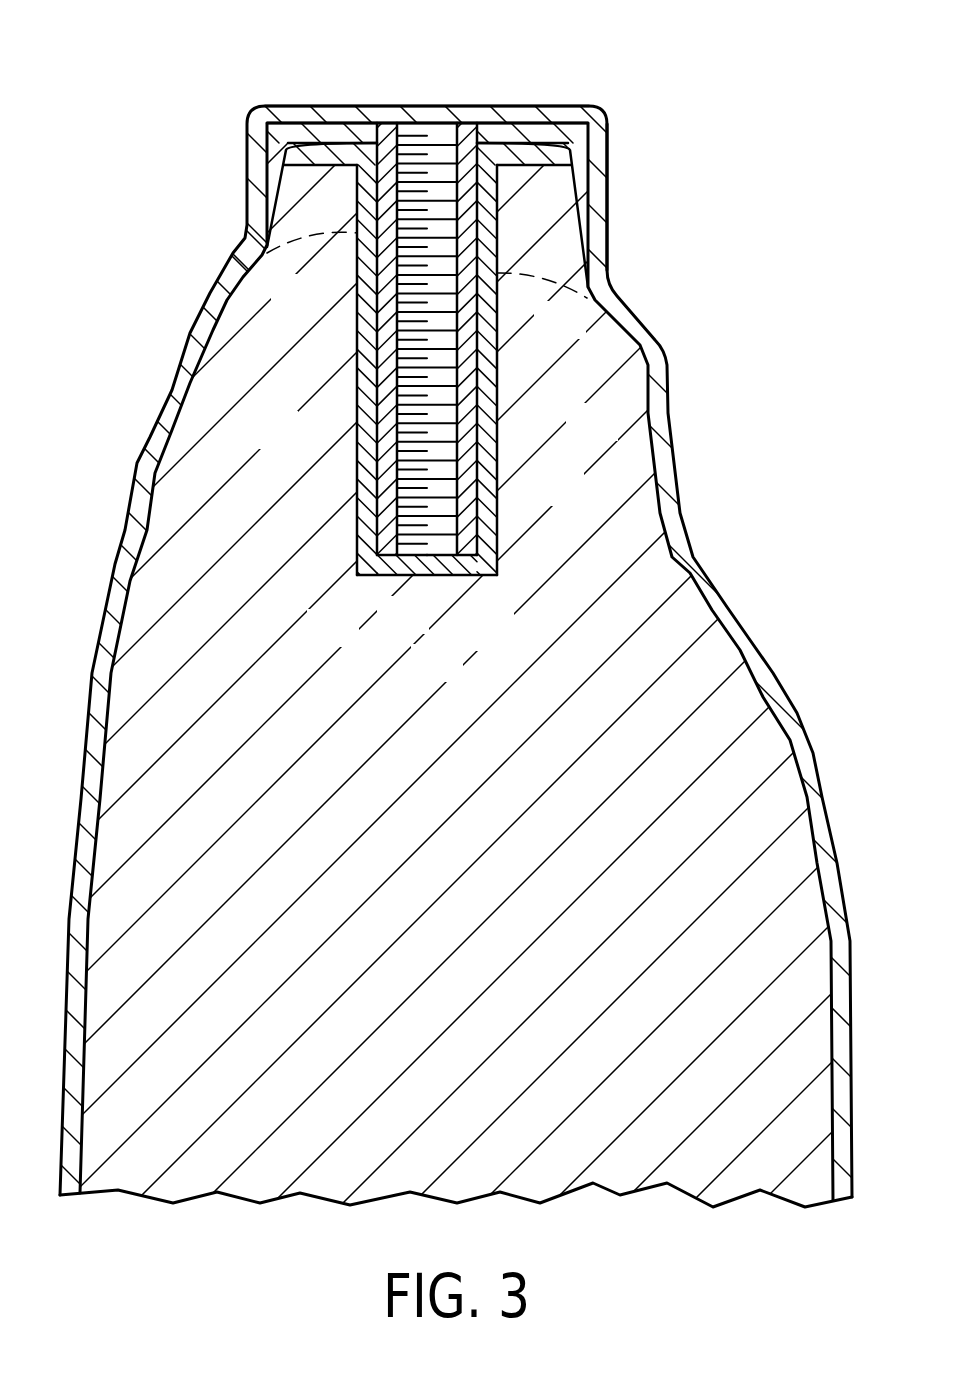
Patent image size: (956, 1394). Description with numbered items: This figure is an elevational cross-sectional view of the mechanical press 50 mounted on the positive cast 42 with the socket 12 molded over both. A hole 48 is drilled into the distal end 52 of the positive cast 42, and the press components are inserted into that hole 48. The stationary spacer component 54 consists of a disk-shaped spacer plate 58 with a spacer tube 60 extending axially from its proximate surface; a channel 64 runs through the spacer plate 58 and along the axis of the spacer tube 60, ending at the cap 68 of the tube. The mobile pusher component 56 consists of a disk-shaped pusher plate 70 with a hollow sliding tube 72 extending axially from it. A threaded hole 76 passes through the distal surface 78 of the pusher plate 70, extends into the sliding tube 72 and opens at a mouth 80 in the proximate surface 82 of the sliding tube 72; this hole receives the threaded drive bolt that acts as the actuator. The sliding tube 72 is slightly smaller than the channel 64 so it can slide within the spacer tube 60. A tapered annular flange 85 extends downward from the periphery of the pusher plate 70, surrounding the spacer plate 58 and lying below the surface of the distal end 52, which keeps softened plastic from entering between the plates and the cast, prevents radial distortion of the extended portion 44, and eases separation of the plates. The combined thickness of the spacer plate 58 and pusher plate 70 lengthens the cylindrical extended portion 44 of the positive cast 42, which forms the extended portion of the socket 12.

The socket 12 is at (708, 592).
The positive cast 42 is at (737, 1190).
The extended portion 44 is at (562, 237).
The hole 48 is at (498, 447).
The mechanical press 50 is at (316, 339).
The distal end 52 is at (545, 157).
The spacer component 54 is at (367, 567).
The pusher component 56 is at (468, 492).
The spacer plate 58 is at (307, 153).
The spacer tube 60 is at (365, 408).
The channel 64 is at (468, 333).
The cap 68 is at (440, 567).
The pusher plate 70 is at (378, 122).
The sliding tube 72 is at (385, 270).
The hole 76 is at (440, 128).
The distal surface 78 is at (300, 125).
The mouth 80 is at (410, 545).
The proximate surface 82 is at (468, 547).
The tapered annular flange 85 is at (600, 168).